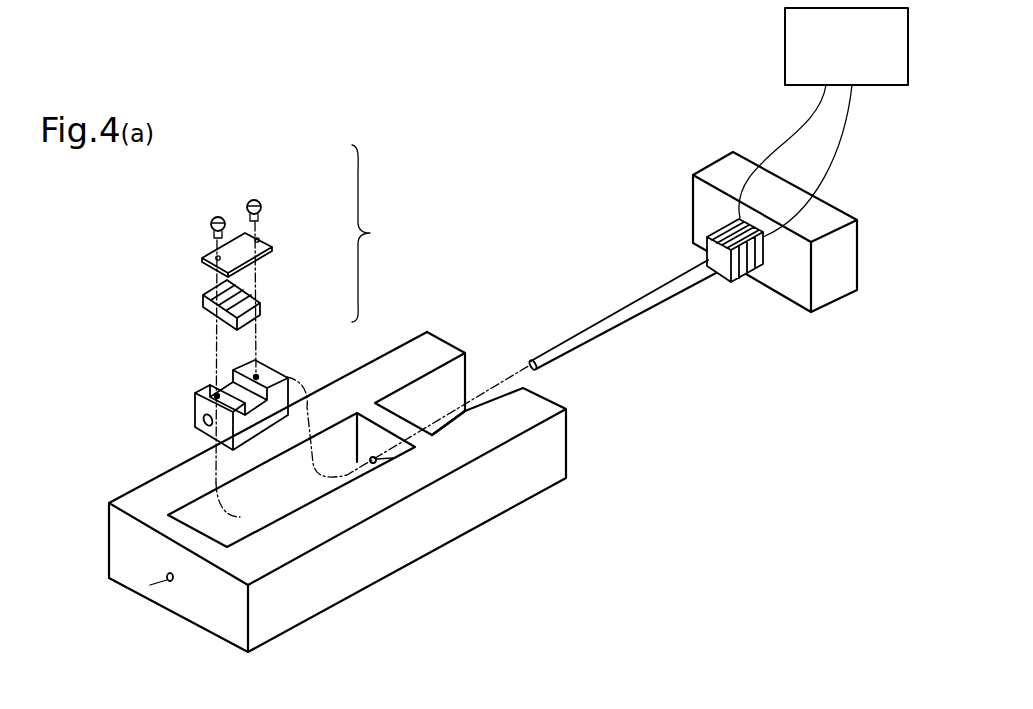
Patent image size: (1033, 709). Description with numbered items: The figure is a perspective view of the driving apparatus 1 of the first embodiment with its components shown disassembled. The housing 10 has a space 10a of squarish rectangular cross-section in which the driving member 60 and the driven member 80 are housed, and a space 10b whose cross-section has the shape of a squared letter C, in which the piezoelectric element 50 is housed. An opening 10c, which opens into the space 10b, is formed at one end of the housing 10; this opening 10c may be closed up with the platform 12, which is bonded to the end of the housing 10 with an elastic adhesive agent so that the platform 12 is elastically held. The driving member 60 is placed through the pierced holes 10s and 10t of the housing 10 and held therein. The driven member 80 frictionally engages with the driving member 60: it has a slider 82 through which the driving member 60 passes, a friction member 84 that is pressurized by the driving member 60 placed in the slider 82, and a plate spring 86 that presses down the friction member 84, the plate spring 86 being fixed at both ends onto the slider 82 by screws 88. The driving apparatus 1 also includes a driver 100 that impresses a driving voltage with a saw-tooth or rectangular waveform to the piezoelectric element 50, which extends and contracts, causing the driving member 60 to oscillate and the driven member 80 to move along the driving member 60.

The driving apparatus 1 is at (656, 490).
The housing 10 is at (492, 502).
The space 10a is at (200, 512).
The space 10b is at (415, 403).
The opening 10c is at (483, 378).
The pierced hole 10s is at (170, 583).
The pierced hole 10t is at (393, 458).
The platform 12 is at (727, 168).
The piezoelectric element 50 is at (742, 277).
The driving member 60 is at (607, 317).
The driven member 80 is at (380, 233).
The slider 82 is at (275, 372).
The friction member 84 is at (260, 300).
The plate spring 86 is at (262, 240).
The screws 88 is at (263, 207).
The driver 100 is at (785, 22).